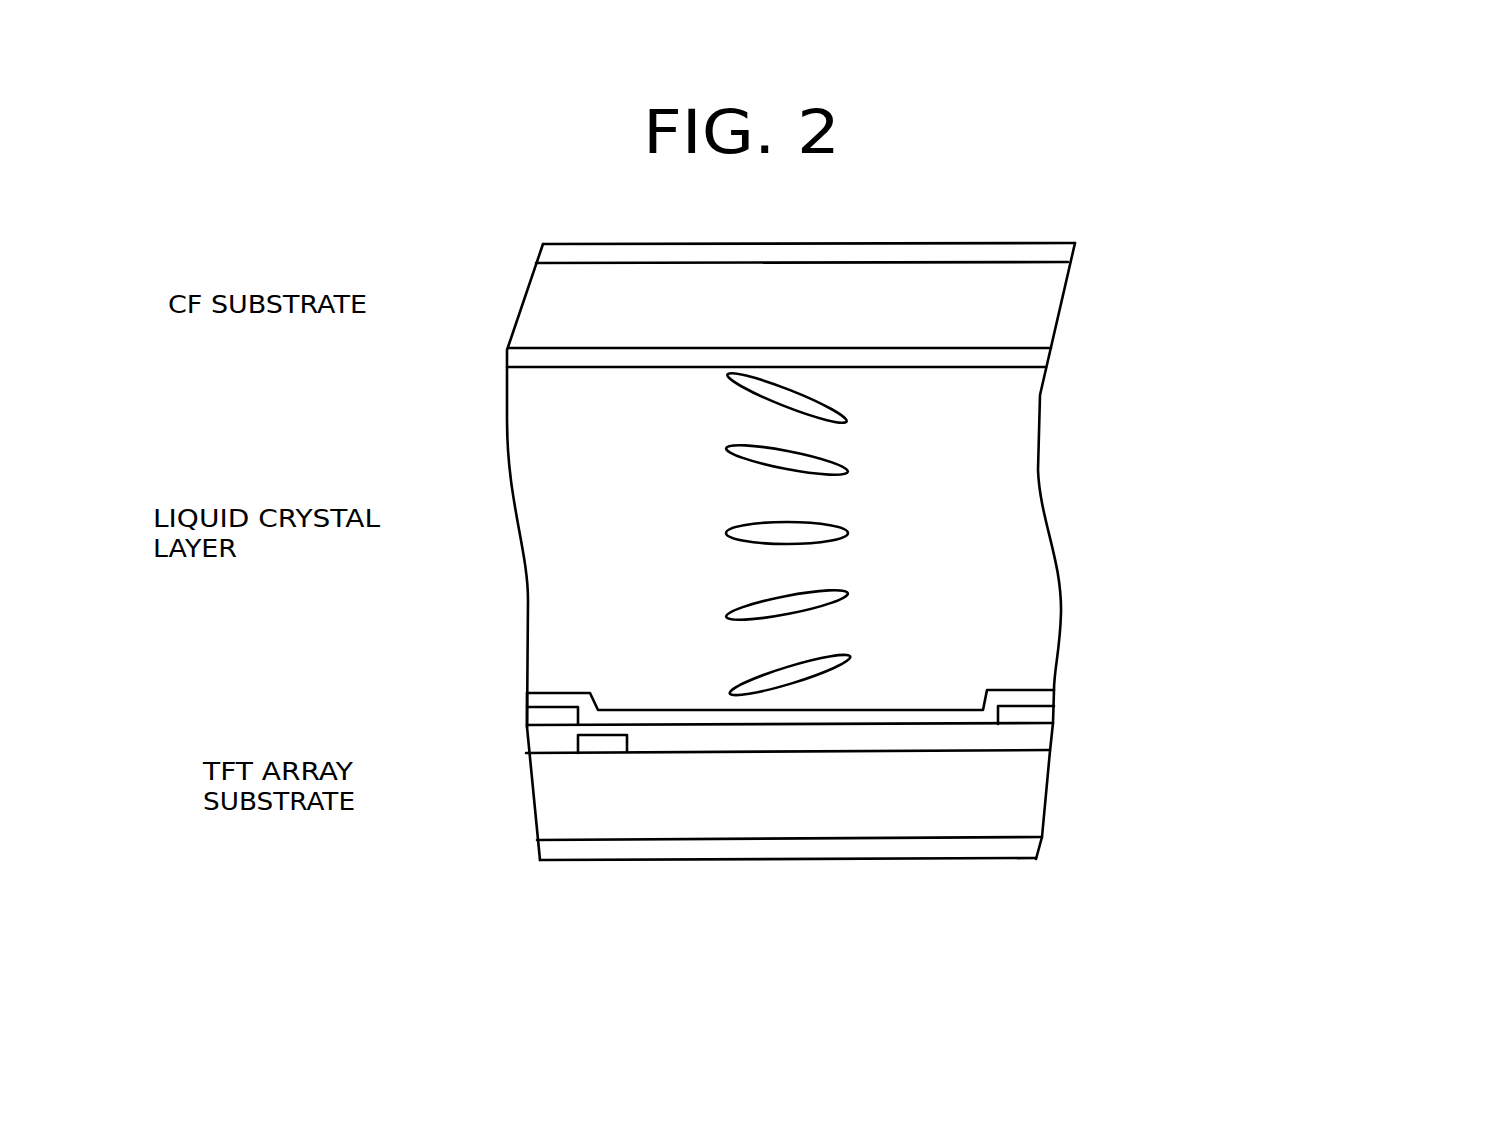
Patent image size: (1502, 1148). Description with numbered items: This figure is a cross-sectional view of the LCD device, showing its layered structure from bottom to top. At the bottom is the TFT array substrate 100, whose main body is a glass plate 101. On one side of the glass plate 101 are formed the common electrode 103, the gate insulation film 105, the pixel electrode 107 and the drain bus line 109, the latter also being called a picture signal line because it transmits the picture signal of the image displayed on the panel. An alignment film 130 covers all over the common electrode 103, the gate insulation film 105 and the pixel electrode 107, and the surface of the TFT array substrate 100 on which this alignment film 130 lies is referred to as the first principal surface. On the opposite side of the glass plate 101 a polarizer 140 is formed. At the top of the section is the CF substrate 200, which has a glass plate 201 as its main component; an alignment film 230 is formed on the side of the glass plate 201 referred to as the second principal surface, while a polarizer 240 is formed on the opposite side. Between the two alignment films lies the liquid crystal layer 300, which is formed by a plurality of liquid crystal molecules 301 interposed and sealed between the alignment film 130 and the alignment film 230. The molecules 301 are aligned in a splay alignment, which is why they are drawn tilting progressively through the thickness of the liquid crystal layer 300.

The TFT array substrate 100 is at (505, 707).
The glass plate 101 is at (1040, 805).
The common electrode 103 is at (602, 748).
The gate insulation film 105 is at (1043, 742).
The pixel electrode 107 is at (1047, 712).
The drain bus line 109 is at (553, 718).
The alignment film 130 is at (1045, 697).
The polarizer 140 is at (1030, 845).
The CF substrate 200 is at (495, 240).
The glass plate 201 is at (1042, 312).
The alignment film 230 is at (1035, 355).
The polarizer 240 is at (1063, 253).
The liquid crystal layer 300 is at (495, 375).
The liquid crystal molecule 301 is at (846, 522).